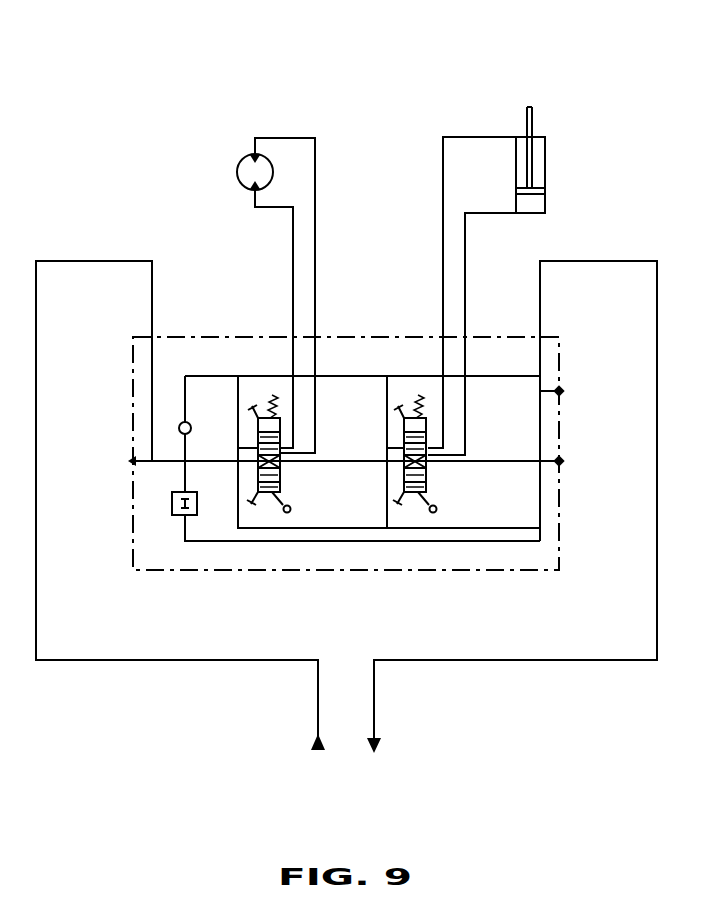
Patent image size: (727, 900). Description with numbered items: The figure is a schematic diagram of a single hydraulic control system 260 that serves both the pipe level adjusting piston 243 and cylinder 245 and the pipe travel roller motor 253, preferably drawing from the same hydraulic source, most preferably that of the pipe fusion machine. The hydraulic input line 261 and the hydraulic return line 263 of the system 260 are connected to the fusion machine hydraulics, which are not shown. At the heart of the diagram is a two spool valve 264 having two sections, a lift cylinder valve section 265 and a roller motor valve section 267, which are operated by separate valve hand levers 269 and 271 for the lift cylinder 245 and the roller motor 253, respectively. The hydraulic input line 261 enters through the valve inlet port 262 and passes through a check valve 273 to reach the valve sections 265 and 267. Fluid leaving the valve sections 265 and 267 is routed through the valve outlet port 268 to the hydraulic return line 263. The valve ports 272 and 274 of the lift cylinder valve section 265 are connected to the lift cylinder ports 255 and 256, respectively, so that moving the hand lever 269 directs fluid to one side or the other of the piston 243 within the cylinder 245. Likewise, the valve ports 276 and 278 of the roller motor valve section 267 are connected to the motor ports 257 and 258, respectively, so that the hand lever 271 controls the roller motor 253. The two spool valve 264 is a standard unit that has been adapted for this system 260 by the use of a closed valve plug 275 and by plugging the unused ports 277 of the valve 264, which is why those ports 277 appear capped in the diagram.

The hydraulic control system 260 is at (346, 369).
The pipe level adjusting piston 243 is at (571, 134).
The cylinder 245 is at (567, 175).
The pipe travel roller motor 253 is at (216, 165).
The lift cylinder port 255 is at (472, 272).
The lift cylinder port 256 is at (472, 316).
The motor port 257 is at (294, 277).
The motor port 258 is at (235, 319).
The hydraulic input line 261 is at (284, 705).
The valve inlet port 262 is at (346, 423).
The hydraulic return line 263 is at (412, 706).
The two spool valve 264 is at (346, 482).
The lift cylinder valve section 265 is at (449, 444).
The roller motor valve section 267 is at (302, 444).
The valve outlet port 268 is at (429, 409).
The valve hand lever 269 is at (444, 504).
The valve hand lever 271 is at (298, 504).
The valve port 272 is at (406, 344).
The check valve 273 is at (126, 456).
The valve port 274 is at (482, 347).
The closed valve plug 275 is at (126, 525).
The valve port 276 is at (332, 326).
The unused ports 277 is at (347, 418).
The valve port 278 is at (257, 334).